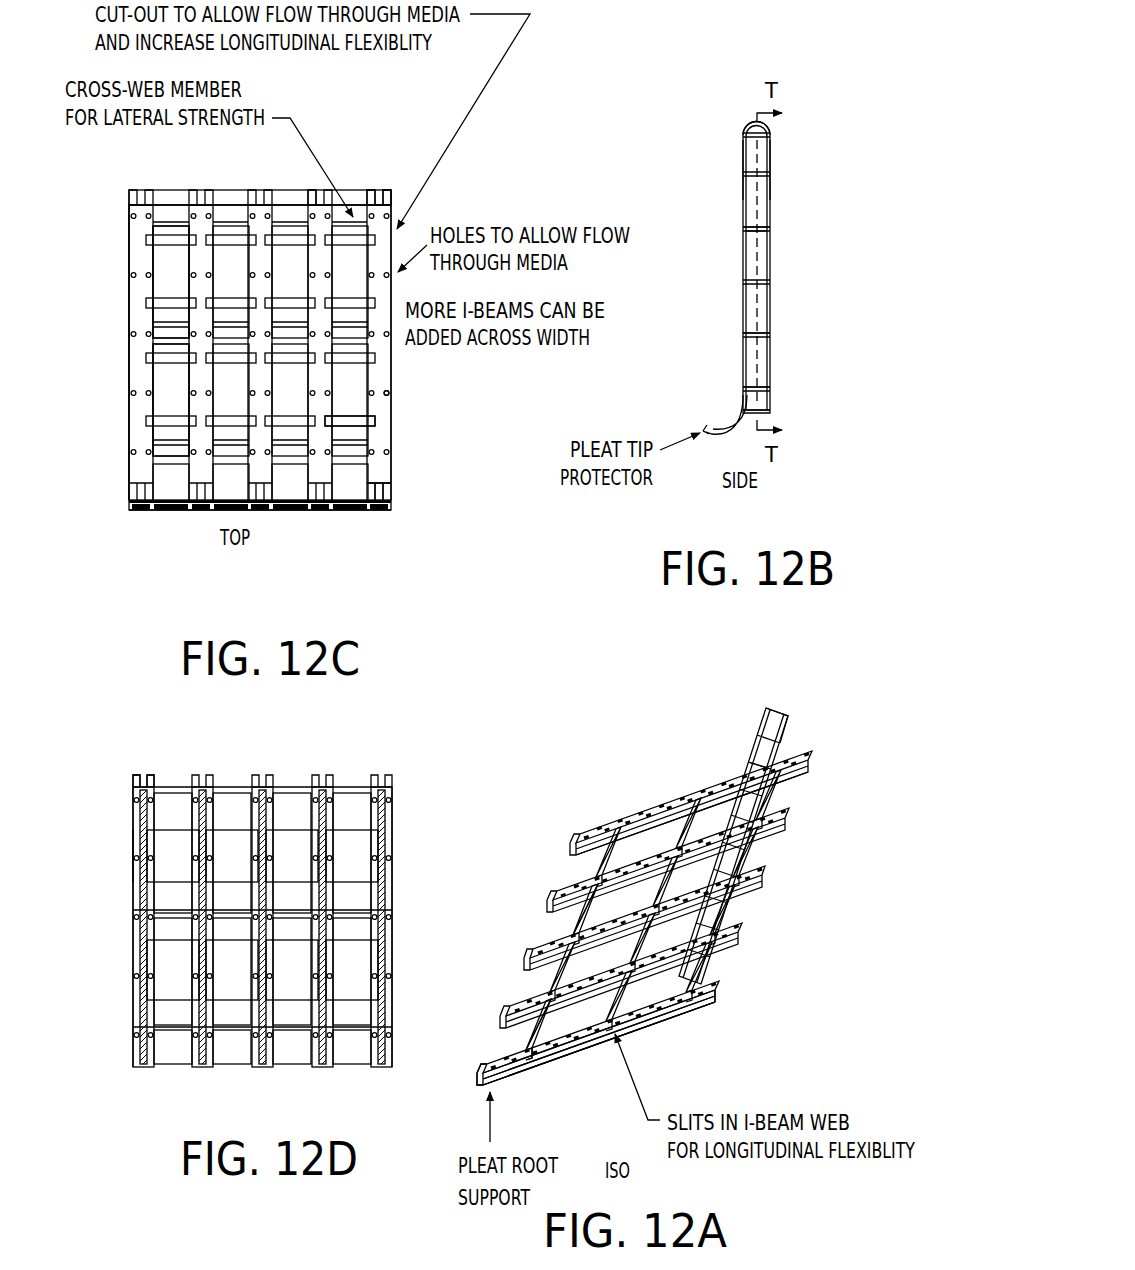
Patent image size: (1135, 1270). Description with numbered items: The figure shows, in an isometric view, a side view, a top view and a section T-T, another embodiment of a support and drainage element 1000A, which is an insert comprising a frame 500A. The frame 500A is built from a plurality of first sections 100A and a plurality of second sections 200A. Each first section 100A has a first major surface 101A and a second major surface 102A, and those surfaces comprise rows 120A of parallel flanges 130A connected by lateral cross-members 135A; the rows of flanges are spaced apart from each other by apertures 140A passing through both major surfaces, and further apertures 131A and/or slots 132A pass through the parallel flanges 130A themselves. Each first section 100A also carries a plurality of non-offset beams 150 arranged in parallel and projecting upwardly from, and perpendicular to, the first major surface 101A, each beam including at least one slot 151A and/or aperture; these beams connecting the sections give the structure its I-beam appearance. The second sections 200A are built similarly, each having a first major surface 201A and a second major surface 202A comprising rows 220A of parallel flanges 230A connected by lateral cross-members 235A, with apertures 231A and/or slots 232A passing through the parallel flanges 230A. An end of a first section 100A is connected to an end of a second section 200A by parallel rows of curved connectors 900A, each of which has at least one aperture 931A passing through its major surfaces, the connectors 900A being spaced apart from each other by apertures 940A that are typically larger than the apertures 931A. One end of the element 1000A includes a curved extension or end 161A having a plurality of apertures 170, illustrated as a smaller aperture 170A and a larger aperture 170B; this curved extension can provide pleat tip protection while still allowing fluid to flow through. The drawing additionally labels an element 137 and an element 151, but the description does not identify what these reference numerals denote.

In FIG. 12C, the first section 100A is at (138, 440).
In FIG. 12B, the first section 100A is at (748, 300).
In FIG. 12D, the first section 100A is at (134, 927).
In FIG. 12A, the first section 100A is at (662, 798).
In FIG. 12B, the first major surface 101A is at (768, 243).
In FIG. 12D, the first major surface 101A is at (134, 893).
In FIG. 12B, the second major surface 102A is at (748, 252).
In FIG. 12A, the second major surface 102A is at (706, 780).
In FIG. 12C, the rows of parallel flanges 120A is at (130, 503).
In FIG. 12C, the parallel flanges 130A is at (140, 378).
In FIG. 12B, the parallel flanges 130A is at (746, 368).
In FIG. 12D, the parallel flanges 130A is at (262, 918).
In FIG. 12A, the parallel flanges 130A is at (651, 910).
In FIG. 12C, the apertures 131A is at (392, 393).
In FIG. 12C, the slots 132A is at (392, 420).
In FIG. 12C, the lateral cross-members 135A is at (170, 225).
In FIG. 12D, the lateral cross-members 135A is at (174, 1025).
In FIG. 12A, the lateral cross-members 135A is at (577, 857).
In FIG. 12C, the end tab 137 is at (392, 483).
In FIG. 12C, the apertures 140A is at (171, 400).
In FIG. 12D, the non-offset beams 150 is at (134, 846).
In FIG. 12D, the second side edge 151 is at (392, 823).
In FIG. 12B, the slot 151A is at (748, 338).
In FIG. 12C, the curved extension or end 161A is at (347, 503).
In FIG. 12B, the curved extension or end 161A is at (706, 440).
In FIG. 12A, the curved extension or end 161A is at (790, 722).
In FIG. 12A, the apertures 170 is at (888, 735).
In FIG. 12A, the aperture 170A is at (790, 742).
In FIG. 12A, the aperture 170B is at (776, 770).
In FIG. 12C, the second section 200A is at (122, 204).
In FIG. 12B, the second section 200A is at (772, 300).
In FIG. 12A, the second section 200A is at (712, 1010).
In FIG. 12B, the first major surface 201A is at (752, 152).
In FIG. 12B, the second major surface 202A is at (775, 168).
In FIG. 12B, the rows of parallel flanges 220A is at (772, 410).
In FIG. 12A, the rows of parallel flanges 220A is at (737, 973).
In FIG. 12A, the parallel flanges 230A is at (680, 1022).
In FIG. 12A, the apertures 231A is at (565, 1068).
In FIG. 12A, the slots 232A is at (534, 1078).
In FIG. 12C, the lateral cross-members 235A is at (180, 205).
In FIG. 12A, the lateral cross-members 235A is at (580, 860).
In FIG. 12C, the frame 500A is at (403, 524).
In FIG. 12A, the frame 500A is at (794, 877).
In FIG. 12C, the curved connectors 900A is at (347, 205).
In FIG. 12B, the curved connectors 900A is at (752, 122).
In FIG. 12D, the curved connectors 900A is at (170, 775).
In FIG. 12A, the curved connectors 900A is at (483, 1084).
In FIG. 12C, the aperture 931A is at (383, 192).
In FIG. 12C, the apertures 940A is at (163, 200).
In FIG. 12B, the support and drainage element 1000A is at (892, 468).
In FIG. 12A, the support and drainage element 1000A is at (507, 974).